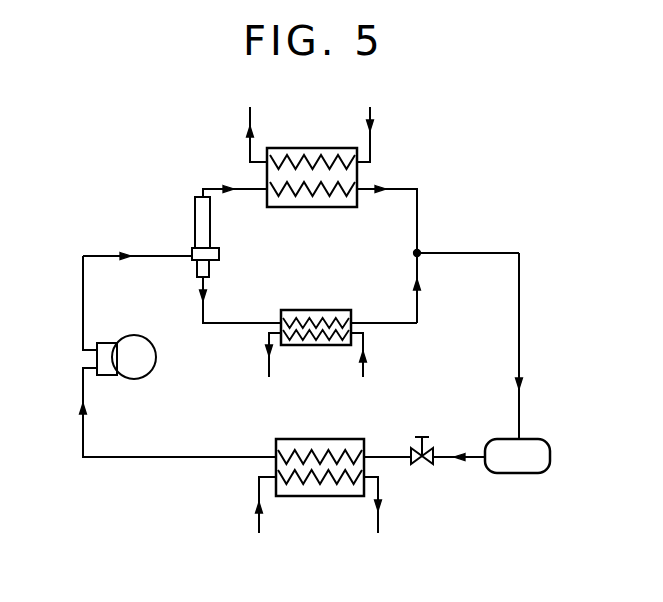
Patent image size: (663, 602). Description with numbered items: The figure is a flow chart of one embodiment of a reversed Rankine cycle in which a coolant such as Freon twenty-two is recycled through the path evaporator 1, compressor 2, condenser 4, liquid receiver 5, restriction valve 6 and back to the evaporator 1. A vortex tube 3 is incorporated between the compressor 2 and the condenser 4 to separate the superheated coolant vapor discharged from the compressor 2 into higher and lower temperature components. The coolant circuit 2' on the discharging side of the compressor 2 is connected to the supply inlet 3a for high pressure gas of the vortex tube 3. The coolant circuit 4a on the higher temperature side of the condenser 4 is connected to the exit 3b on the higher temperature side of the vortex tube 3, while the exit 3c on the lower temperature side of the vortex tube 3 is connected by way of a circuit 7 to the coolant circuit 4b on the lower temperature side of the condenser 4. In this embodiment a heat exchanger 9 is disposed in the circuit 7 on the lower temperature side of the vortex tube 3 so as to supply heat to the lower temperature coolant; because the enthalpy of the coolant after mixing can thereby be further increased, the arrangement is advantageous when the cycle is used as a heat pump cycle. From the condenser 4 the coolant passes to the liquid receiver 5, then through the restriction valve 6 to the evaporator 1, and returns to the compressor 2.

The evaporator 1 is at (333, 440).
The compressor 2 is at (126, 381).
The coolant circuit 2' is at (58, 304).
The vortex tube 3 is at (186, 230).
The supply inlet 3a is at (190, 262).
The exit on the higher temperature side 3b is at (195, 197).
The exit on the lower temperature side 3c is at (241, 300).
The condenser 4 is at (315, 148).
The coolant circuit 4a is at (213, 188).
The coolant circuit 4b is at (419, 207).
The liquid receiver 5 is at (540, 458).
The restriction valve 6 is at (423, 465).
The circuit 7 is at (222, 325).
The heat exchanger 9 is at (332, 317).